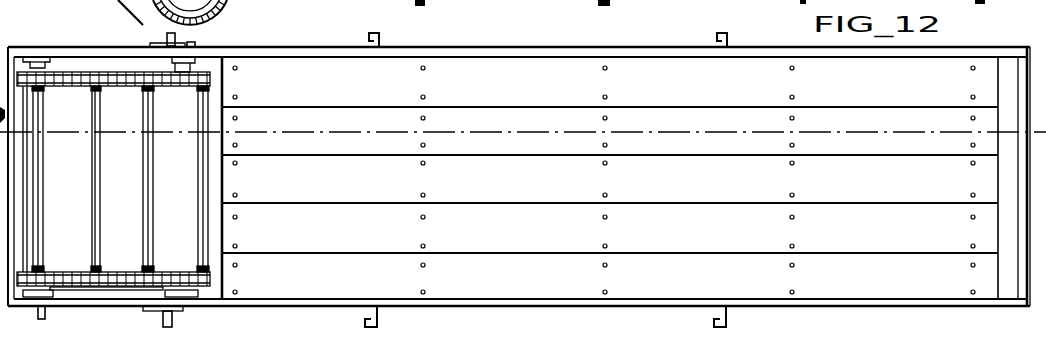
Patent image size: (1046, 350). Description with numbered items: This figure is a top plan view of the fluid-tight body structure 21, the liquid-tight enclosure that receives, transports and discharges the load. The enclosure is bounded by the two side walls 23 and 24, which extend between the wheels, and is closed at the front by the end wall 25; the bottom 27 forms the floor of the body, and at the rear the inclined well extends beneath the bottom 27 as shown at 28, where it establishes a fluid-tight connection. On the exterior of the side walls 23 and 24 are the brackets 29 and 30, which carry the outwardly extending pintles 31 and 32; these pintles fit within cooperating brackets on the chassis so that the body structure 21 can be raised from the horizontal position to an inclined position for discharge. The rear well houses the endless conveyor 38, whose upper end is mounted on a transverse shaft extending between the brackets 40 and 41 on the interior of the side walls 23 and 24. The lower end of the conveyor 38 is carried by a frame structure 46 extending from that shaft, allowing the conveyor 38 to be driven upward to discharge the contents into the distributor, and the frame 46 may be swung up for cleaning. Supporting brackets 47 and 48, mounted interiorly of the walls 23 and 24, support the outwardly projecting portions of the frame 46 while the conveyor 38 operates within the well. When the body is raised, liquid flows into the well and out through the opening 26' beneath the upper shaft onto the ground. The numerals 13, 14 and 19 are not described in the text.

The section line 13 is at (942, 122).
The drive shaft 14 is at (135, 22).
The support leg 19 is at (37, 312).
The body structure 21 is at (510, 42).
The side wall 23 is at (633, 42).
The side wall 24 is at (632, 304).
The end wall 25 is at (1013, 172).
The opening beneath shaft 26' is at (113, 181).
The bottom 27 is at (332, 234).
The well extension beneath bottom 28 is at (229, 10).
The bracket 29 is at (182, 313).
The bracket 30 is at (193, 45).
The pintle 31 is at (160, 313).
The pintle 32 is at (166, 40).
The endless conveyor 38 is at (90, 117).
The bracket 40 is at (33, 57).
The bracket 41 is at (47, 272).
The frame structure 46 is at (137, 162).
The supporting bracket 47 is at (180, 88).
The supporting bracket 48 is at (177, 273).